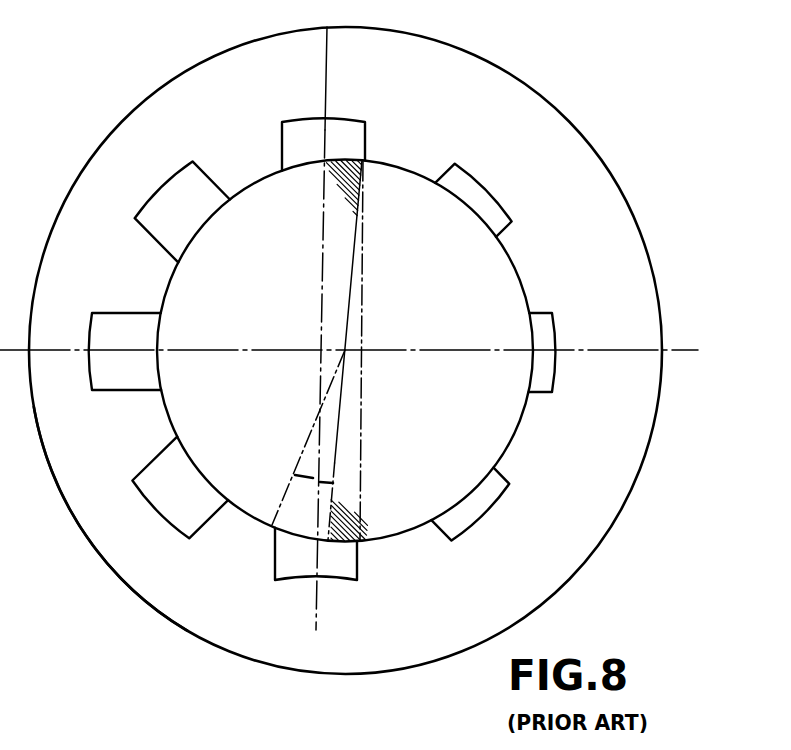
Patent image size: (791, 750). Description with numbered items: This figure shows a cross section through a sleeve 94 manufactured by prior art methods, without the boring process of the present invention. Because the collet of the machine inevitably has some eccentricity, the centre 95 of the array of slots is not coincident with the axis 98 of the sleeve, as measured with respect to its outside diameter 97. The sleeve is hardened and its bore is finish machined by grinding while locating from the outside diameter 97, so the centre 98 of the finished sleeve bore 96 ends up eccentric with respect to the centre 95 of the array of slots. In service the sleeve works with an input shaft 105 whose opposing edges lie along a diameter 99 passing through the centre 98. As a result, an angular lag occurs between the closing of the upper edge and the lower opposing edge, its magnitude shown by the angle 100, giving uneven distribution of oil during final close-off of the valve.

The sleeve 94 is at (613, 405).
The outside diameter 97 is at (90, 545).
The finished sleeve bore 96 is at (520, 267).
The input shaft 105 is at (470, 430).
The centre of the array of slots 95 is at (322, 352).
The diameter 99 is at (352, 292).
The axis of the sleeve 98 is at (347, 350).
The angle 100 is at (312, 483).